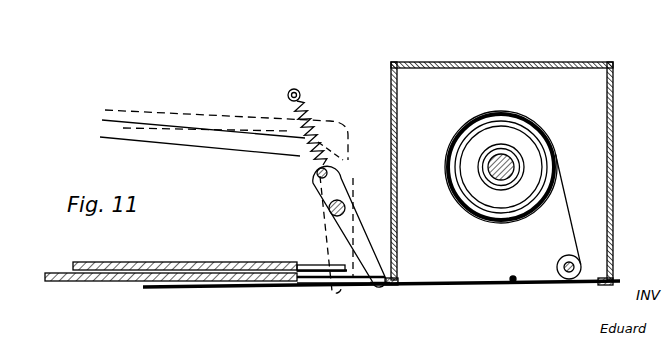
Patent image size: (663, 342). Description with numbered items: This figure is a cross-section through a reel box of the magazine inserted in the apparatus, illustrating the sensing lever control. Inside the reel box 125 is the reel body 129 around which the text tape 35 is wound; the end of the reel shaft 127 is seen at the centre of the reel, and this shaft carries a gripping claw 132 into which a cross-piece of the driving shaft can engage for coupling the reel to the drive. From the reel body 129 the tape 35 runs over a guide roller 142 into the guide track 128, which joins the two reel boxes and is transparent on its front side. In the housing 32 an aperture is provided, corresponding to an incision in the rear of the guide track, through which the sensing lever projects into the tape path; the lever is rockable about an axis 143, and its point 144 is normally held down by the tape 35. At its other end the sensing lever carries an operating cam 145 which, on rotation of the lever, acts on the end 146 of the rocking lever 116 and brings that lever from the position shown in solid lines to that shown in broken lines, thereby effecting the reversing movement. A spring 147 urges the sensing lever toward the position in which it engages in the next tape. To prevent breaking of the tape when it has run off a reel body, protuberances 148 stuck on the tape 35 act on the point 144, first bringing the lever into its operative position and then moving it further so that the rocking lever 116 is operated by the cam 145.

The reel box 125 is at (443, 66).
The text tape 35 is at (468, 122).
The reel body 129 is at (501, 145).
The gripping claw 132 is at (513, 160).
The reel shaft 127 is at (514, 165).
The guide roller 142 is at (566, 273).
The protuberance 148 is at (512, 283).
The rocking lever 116 is at (220, 145).
The spring 147 is at (297, 112).
The operating cam 145 is at (316, 190).
The end of rocking lever 146 is at (333, 165).
The axis 143 is at (331, 210).
The point of sensing lever 144 is at (377, 286).
The housing 32 is at (158, 265).
The guide track 128 is at (118, 279).